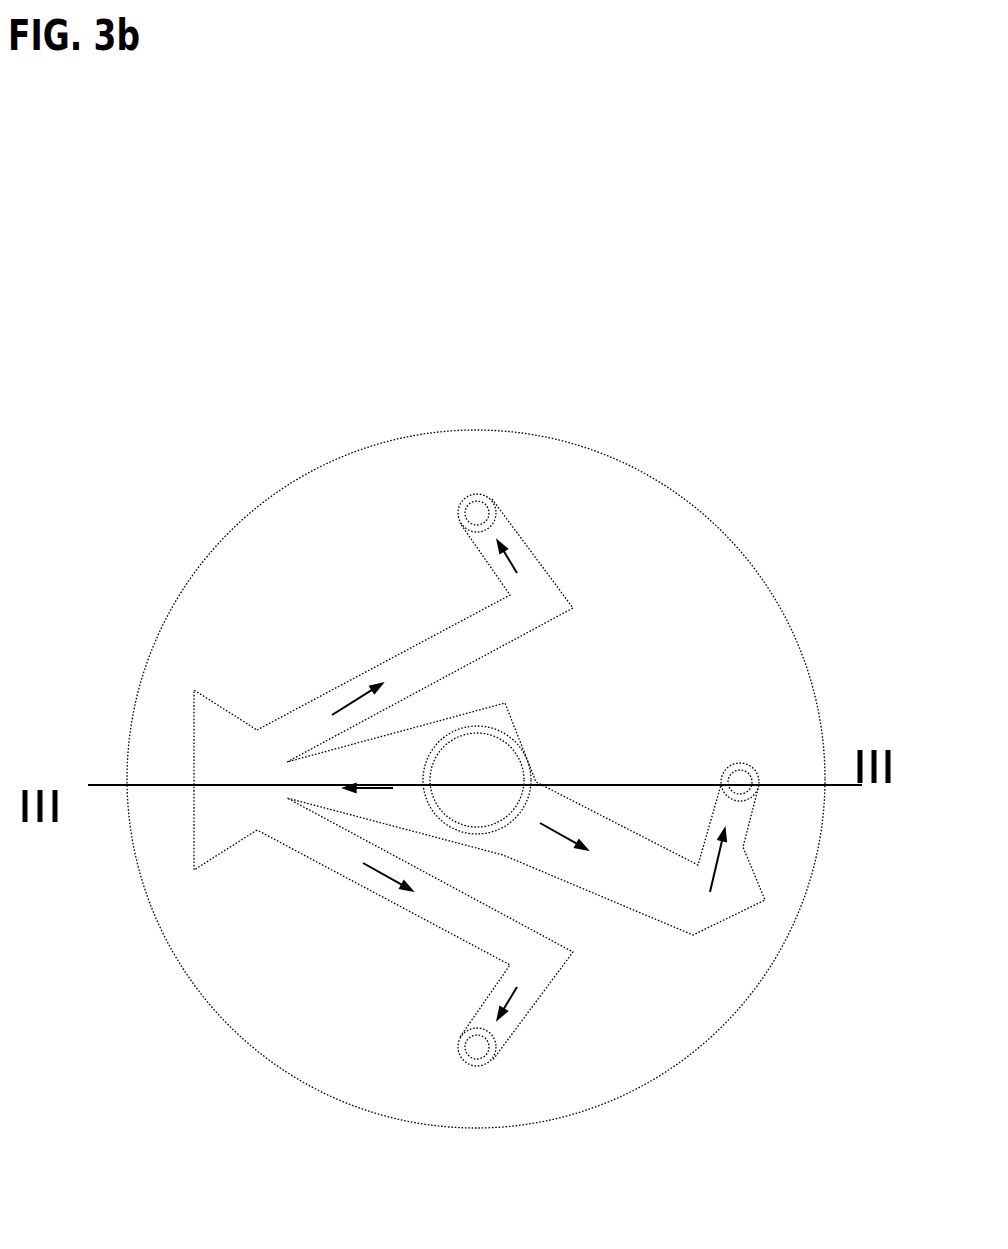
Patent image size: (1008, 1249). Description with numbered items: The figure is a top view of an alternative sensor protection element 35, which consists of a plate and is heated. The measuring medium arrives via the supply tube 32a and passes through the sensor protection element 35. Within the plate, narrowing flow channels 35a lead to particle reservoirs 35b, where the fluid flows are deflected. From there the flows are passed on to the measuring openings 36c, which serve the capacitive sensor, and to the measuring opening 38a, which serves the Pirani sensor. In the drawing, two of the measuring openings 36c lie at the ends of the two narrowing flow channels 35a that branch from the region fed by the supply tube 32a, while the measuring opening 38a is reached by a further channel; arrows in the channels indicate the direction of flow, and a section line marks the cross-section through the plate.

The central hub opening 32a is at (427, 758).
The rotor disc 35 is at (572, 439).
The guide channel 35a is at (373, 807).
The chamber recess 35b is at (210, 715).
The end stop position 36c is at (477, 513).
The pivot opening 38a is at (740, 782).